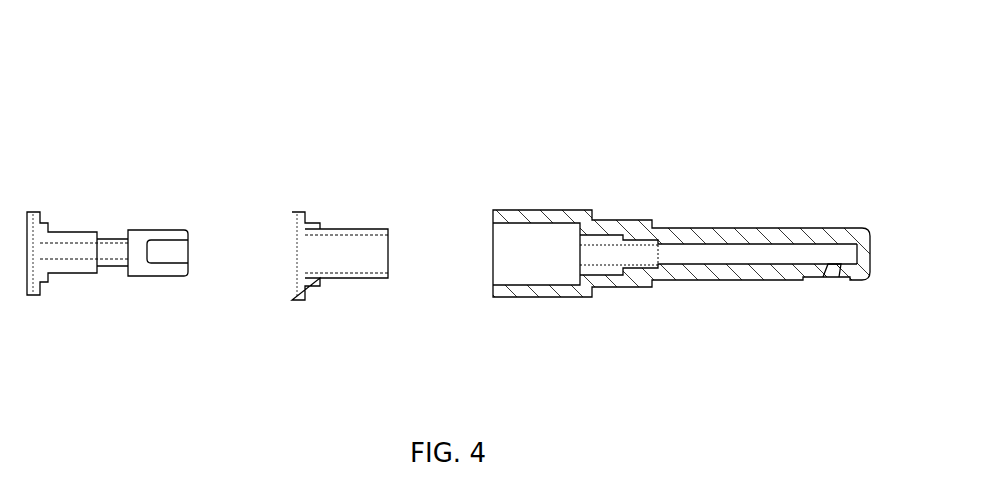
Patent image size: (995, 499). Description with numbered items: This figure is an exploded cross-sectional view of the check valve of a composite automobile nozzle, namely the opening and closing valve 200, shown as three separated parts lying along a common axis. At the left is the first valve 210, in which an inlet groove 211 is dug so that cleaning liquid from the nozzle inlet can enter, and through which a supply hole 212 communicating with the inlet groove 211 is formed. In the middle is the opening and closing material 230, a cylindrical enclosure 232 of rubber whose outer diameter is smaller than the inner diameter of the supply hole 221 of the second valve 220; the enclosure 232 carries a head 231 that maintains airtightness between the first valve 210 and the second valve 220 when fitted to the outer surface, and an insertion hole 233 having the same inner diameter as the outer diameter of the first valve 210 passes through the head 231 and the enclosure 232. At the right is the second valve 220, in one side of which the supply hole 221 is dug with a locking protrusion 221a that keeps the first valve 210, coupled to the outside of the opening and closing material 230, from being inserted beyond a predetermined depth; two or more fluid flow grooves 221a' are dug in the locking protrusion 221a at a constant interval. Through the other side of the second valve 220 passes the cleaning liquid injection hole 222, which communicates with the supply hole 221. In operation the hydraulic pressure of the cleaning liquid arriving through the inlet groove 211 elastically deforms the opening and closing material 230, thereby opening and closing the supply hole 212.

The opening and closing valve 200 is at (165, 90).
The first valve 210 is at (160, 220).
The inlet groove 211 is at (78, 262).
The supply hole 212 is at (113, 237).
The second valve 220 is at (720, 212).
The supply hole 221 is at (523, 268).
The locking protrusion 221a is at (712, 194).
The fluid flow grooves 221a' is at (639, 314).
The cleaning liquid injection hole 222 is at (837, 270).
The opening and closing material 230 is at (337, 212).
The head 231 is at (295, 302).
The enclosure 232 is at (378, 227).
The insertion hole 233 is at (336, 264).